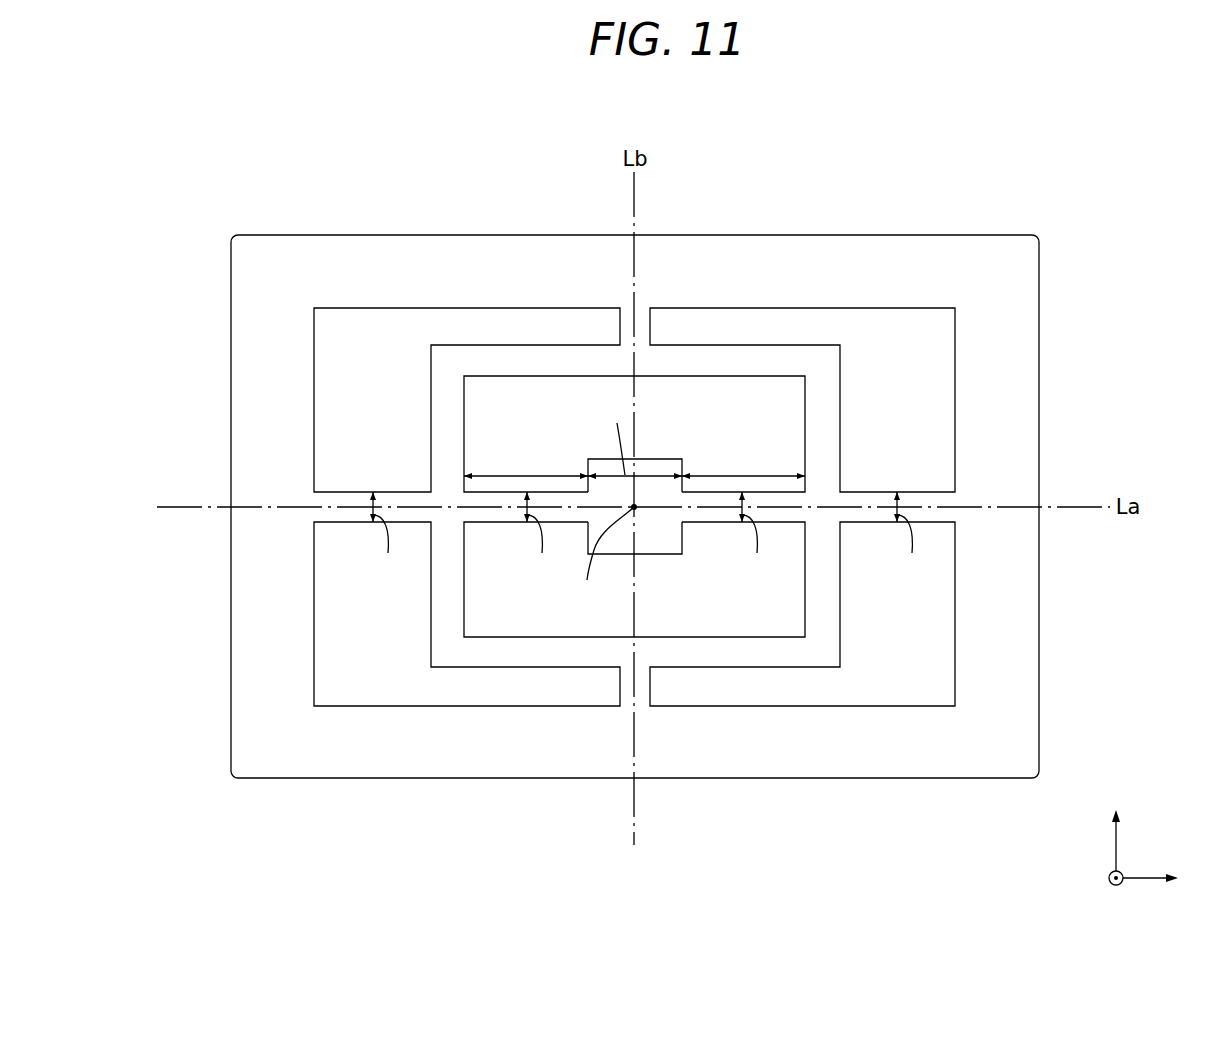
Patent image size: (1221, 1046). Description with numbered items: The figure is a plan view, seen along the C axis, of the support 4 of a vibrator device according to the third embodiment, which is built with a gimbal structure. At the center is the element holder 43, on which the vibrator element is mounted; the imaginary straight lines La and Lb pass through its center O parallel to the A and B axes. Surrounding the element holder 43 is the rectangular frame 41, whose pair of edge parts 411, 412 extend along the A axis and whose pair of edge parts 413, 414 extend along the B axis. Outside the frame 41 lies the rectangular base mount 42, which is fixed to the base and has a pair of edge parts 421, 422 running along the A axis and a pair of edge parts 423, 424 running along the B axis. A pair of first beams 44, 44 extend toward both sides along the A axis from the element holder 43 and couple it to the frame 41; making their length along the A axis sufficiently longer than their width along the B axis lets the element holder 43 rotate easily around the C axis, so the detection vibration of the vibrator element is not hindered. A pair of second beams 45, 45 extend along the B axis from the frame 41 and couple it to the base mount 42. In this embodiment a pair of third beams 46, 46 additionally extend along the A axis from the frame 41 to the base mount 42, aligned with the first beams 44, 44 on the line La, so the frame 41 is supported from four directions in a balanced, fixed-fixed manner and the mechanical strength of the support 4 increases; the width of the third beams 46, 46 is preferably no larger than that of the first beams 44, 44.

The support 4 is at (979, 154).
The frame 41 is at (780, 365).
The edge part 411 is at (565, 360).
The edge part 412 is at (503, 652).
The edge part 413 is at (825, 608).
The edge part 414 is at (437, 608).
The base mount 42 is at (1008, 365).
The edge part 421 is at (457, 267).
The edge part 422 is at (753, 738).
The edge part 423 is at (1008, 433).
The edge part 424 is at (255, 432).
The element holder 43 is at (602, 468).
The first beam 44 is at (499, 522).
The second beam 45 is at (652, 328).
The third beam 46 is at (350, 492).